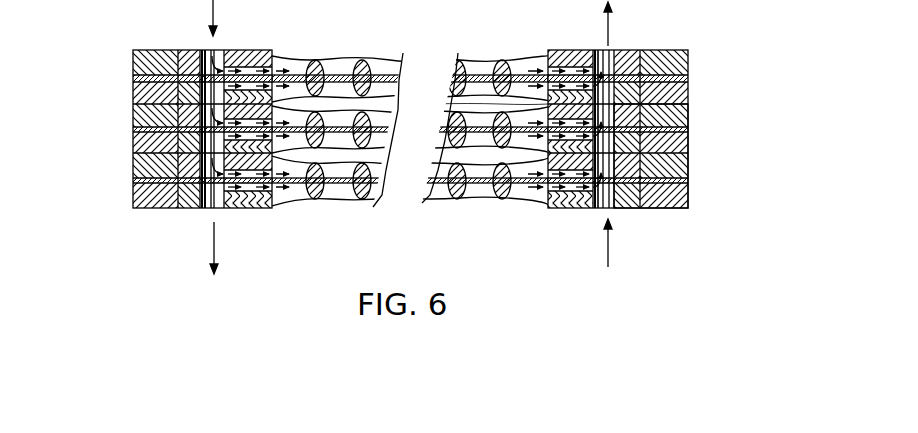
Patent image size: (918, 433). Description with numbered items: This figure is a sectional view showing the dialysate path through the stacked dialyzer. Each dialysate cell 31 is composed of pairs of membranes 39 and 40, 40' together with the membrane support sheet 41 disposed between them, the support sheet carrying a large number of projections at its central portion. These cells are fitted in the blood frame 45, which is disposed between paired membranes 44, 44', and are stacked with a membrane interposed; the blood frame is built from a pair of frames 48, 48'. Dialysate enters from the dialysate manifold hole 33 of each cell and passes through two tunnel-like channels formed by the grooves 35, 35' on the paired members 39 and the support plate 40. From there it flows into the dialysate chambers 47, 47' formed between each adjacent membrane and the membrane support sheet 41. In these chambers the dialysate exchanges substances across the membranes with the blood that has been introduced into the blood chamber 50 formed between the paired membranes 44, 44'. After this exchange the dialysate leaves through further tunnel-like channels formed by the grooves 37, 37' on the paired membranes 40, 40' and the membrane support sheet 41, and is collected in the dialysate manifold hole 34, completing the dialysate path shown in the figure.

The dialysate cell 31 is at (92, 33).
The dialysate manifold hole 33 is at (214, 55).
The dialysate manifold hole 34 is at (608, 55).
The groove 35 is at (267, 92).
The groove 35' is at (285, 116).
The groove 37 is at (548, 91).
The groove 37' is at (563, 113).
The membrane 39 is at (190, 62).
The membrane 40 is at (671, 46).
The membrane 40' is at (675, 93).
The membrane support sheet 41 is at (134, 78).
The membrane 44 is at (386, 106).
The membrane 44' is at (431, 114).
The blood frame 45 is at (740, 127).
The dialysate chamber 47 is at (361, 120).
The dialysate chamber 47' is at (472, 129).
The frame 48 is at (674, 128).
The frame 48' is at (677, 180).
The blood chamber 50 is at (479, 105).